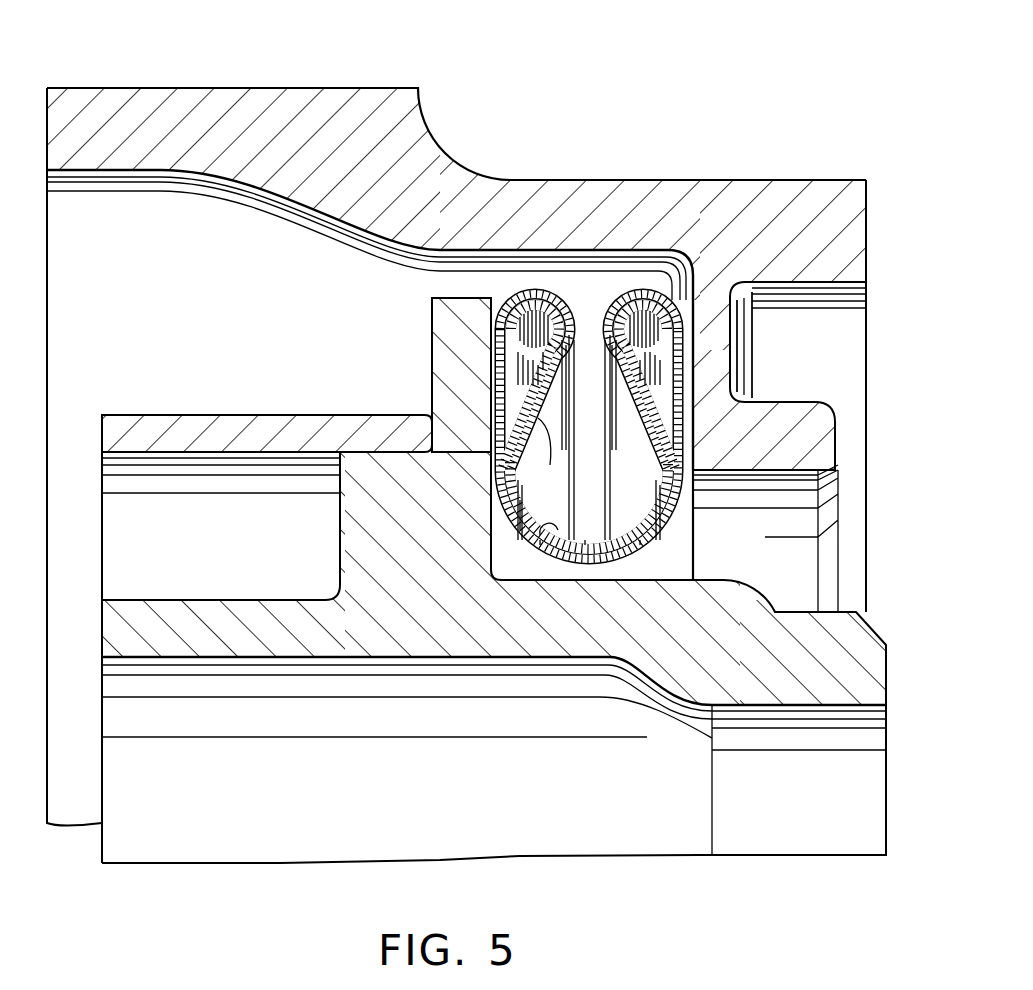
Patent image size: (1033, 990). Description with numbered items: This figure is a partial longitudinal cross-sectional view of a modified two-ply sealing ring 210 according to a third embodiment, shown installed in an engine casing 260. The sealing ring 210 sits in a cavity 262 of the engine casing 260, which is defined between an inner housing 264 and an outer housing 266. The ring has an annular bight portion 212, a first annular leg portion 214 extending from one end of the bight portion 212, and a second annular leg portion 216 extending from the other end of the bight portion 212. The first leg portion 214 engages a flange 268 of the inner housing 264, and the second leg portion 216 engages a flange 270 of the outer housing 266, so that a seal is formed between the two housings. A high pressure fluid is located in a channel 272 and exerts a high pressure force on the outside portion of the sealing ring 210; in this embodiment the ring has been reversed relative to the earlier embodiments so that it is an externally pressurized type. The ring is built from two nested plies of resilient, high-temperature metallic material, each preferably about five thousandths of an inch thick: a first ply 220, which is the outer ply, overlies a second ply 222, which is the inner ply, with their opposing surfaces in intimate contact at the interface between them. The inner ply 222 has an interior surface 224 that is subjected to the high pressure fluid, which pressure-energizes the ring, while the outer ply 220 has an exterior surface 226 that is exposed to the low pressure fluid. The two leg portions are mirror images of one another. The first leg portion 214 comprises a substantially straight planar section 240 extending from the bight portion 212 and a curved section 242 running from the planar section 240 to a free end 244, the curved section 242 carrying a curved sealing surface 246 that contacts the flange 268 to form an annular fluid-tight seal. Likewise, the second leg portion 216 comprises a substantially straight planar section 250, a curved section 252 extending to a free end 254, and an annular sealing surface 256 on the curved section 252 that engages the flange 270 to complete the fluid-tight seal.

The two-ply sealing ring 210 is at (592, 305).
The annular bight portion 212 is at (605, 580).
The first annular leg portion 214 is at (541, 286).
The second annular leg portion 216 is at (629, 286).
The first ply 220 is at (490, 455).
The second ply 222 is at (506, 526).
The interior surface 224 is at (546, 578).
The exterior surface 226 is at (660, 585).
The planar section 240 is at (516, 386).
The curved section 242 is at (498, 290).
The free end 244 is at (508, 362).
The curved sealing surface 246 is at (512, 325).
The planar section 250 is at (657, 397).
The curved section 252 is at (700, 290).
The free end 254 is at (662, 362).
The annular sealing surface 256 is at (765, 275).
The engine casing 260 is at (305, 86).
The cavity 262 is at (703, 550).
The inner housing 264 is at (483, 657).
The outer housing 266 is at (650, 222).
The flange 268 is at (505, 340).
The flange 270 is at (710, 298).
The channel 272 is at (460, 284).